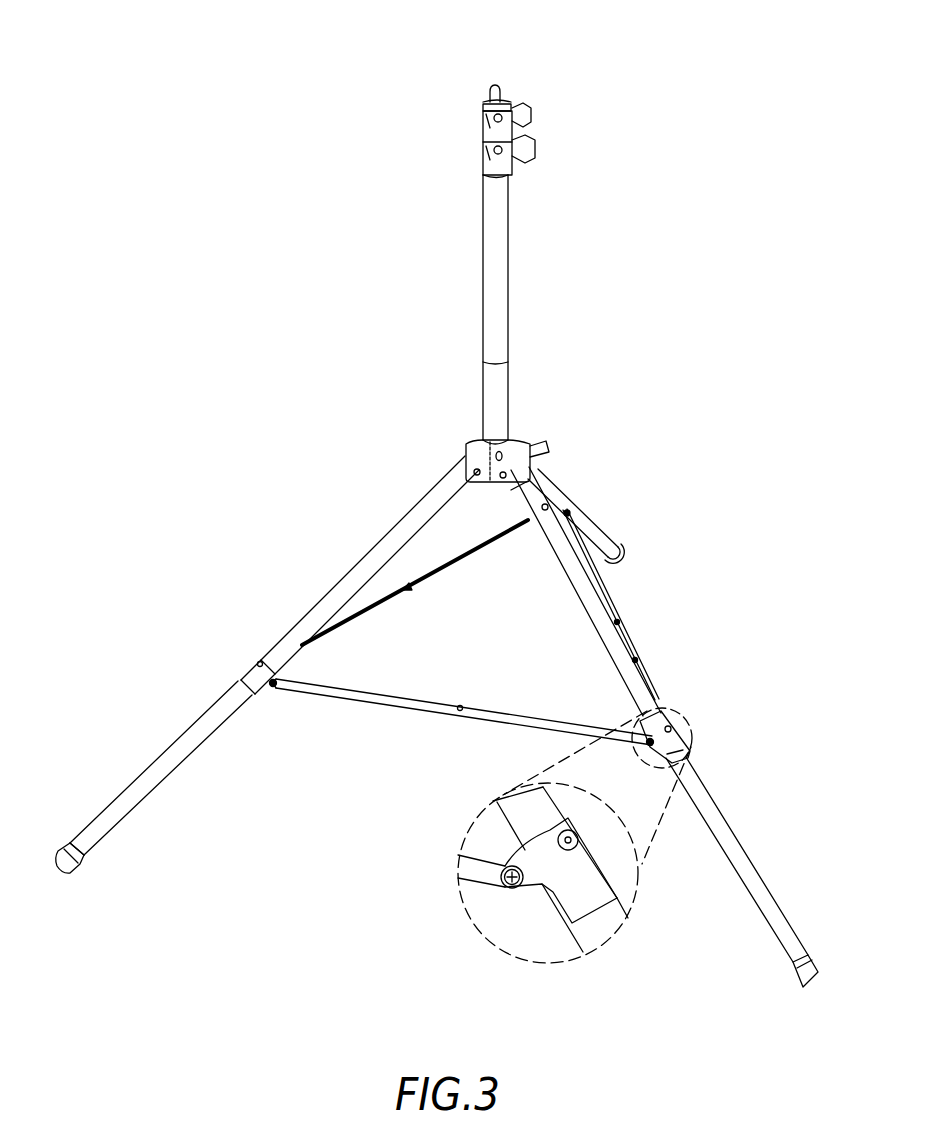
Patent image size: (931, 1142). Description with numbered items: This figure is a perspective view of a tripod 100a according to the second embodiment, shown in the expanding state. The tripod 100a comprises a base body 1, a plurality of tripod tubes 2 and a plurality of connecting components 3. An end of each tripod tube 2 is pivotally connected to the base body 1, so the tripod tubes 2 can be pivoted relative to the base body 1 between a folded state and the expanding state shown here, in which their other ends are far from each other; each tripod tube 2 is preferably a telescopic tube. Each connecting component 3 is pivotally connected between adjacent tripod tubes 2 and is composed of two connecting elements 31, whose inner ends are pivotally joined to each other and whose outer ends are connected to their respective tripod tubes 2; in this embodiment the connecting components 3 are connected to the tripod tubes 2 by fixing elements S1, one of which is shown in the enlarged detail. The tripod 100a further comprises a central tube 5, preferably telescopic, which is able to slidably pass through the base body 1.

The tripod 100a is at (690, 72).
The central tube 5 is at (498, 300).
The base body 1 is at (477, 450).
The tripod tube 2 is at (347, 587).
The connecting component 3 is at (478, 797).
The connecting element 31 is at (380, 697).
The fixing element S1 is at (560, 880).